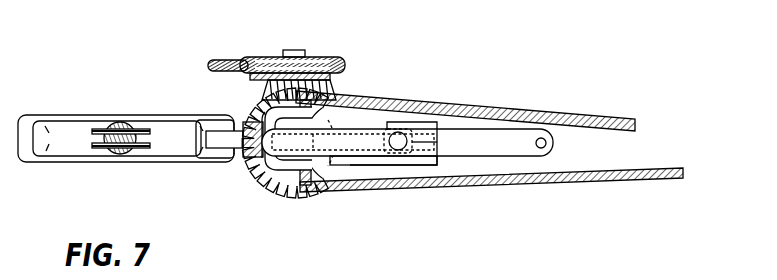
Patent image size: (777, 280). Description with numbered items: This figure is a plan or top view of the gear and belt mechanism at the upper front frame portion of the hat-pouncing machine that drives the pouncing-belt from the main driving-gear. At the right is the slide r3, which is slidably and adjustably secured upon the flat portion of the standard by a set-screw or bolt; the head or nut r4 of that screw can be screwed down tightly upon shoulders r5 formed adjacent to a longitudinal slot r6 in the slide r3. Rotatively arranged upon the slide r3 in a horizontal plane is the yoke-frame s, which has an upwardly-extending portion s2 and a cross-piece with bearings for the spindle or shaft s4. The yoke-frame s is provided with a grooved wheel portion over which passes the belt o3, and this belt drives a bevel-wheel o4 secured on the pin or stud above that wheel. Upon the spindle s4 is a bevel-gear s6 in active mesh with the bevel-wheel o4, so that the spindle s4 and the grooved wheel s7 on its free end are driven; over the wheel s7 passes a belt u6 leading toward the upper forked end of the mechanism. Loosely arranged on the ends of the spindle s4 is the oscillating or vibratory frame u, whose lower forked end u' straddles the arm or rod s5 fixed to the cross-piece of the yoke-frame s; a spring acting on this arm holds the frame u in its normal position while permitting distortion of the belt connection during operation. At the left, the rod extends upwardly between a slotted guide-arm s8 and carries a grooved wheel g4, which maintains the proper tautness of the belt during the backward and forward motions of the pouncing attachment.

The slotted guide-arm s8 is at (126, 138).
The grooved wheel g4 is at (114, 148).
The upwardly-extending portion s2 is at (210, 139).
The yoke-frame s is at (256, 150).
The belt u6 is at (220, 61).
The grooved wheel s7 is at (258, 62).
The spindle or shaft s4 is at (296, 50).
The bevel-gear s6 is at (266, 86).
The oscillating or vibratory frame u is at (271, 145).
The lower forked end u' is at (277, 164).
The bevel-wheel o4 is at (262, 110).
The belt o3 is at (615, 131).
The arm or rod s5 is at (407, 147).
The shoulders r5 is at (374, 128).
The head or nut r4 is at (406, 128).
The slide r3 is at (437, 123).
The longitudinal slot r6 is at (437, 142).